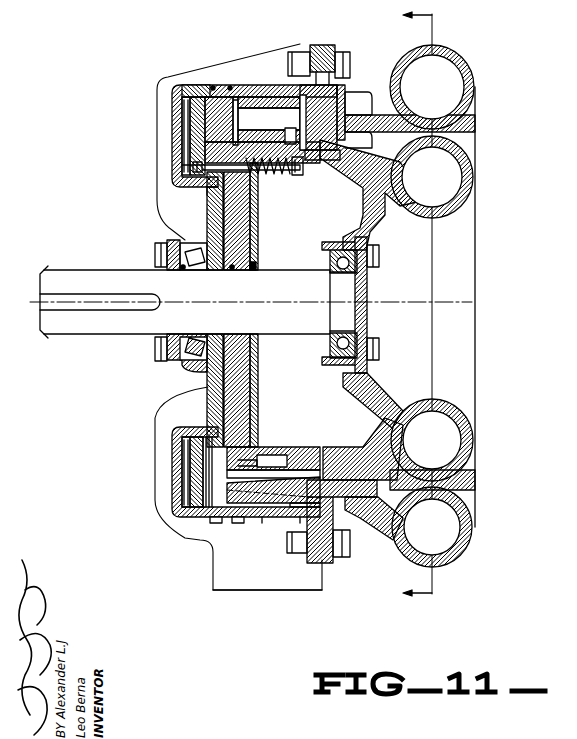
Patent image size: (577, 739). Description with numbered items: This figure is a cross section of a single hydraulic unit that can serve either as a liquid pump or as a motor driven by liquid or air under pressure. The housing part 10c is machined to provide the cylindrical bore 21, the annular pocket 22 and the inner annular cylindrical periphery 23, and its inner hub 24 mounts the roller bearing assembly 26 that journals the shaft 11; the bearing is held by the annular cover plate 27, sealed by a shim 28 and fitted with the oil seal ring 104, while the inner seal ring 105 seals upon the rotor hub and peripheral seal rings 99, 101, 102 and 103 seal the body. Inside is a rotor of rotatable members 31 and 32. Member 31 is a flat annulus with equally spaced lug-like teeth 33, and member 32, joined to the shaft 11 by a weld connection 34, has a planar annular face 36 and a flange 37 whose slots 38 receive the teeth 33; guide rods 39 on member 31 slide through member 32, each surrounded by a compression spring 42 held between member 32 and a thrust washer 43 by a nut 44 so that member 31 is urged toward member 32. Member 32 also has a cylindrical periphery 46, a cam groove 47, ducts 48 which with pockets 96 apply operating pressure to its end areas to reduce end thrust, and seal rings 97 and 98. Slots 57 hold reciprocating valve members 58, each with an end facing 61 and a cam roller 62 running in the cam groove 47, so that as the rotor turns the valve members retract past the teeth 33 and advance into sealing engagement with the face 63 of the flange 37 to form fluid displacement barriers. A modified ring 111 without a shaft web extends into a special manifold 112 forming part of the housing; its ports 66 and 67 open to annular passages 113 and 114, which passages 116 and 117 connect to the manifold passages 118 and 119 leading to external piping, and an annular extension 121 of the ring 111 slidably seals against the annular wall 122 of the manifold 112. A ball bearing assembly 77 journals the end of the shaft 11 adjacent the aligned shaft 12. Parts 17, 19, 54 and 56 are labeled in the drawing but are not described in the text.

The housing part 10c is at (170, 75).
The shaft 11 is at (60, 332).
The shaft 12 is at (427, 305).
The housing wall 17 is at (170, 140).
The base plate 19 is at (233, 590).
The cylindrical bore 21 is at (181, 105).
The annular pocket 22 is at (186, 458).
The inner annular cylindrical periphery 23 is at (171, 440).
The inner hub 24 is at (200, 242).
The roller bearing assembly 26 is at (198, 365).
The annular cover plate 27 is at (165, 240).
The shim 28 is at (176, 240).
The rotatable member 31 is at (195, 122).
The rotatable member 32 is at (254, 222).
The lug-like teeth 33 is at (218, 96).
The weld connection 34 is at (256, 262).
The planar annular face 36 is at (204, 490).
The flange 37 is at (212, 497).
The slots 38 is at (197, 85).
The guide rods 39 is at (188, 166).
The compression spring 42 is at (252, 185).
The thrust washer 43 is at (286, 174).
The nut 44 is at (300, 170).
The cylindrical periphery 46 is at (300, 475).
The cam groove 47 is at (272, 445).
The ducts 48 is at (230, 432).
The cone 54 is at (246, 487).
The cover plate 56 is at (248, 520).
The slots 57 is at (300, 85).
The reciprocating valve member 58 is at (255, 96).
The end facing 61 is at (236, 96).
The cam roller 62 is at (276, 128).
The face 63 is at (205, 540).
The ports 66 is at (288, 466).
The ports 67 is at (272, 523).
The ball bearing assembly 77 is at (368, 262).
The pockets 96 is at (258, 245).
The seal ring 97 is at (248, 458).
The seal ring 98 is at (326, 150).
The peripheral seal ring 99 is at (215, 190).
The peripheral seal ring 101 is at (213, 86).
The peripheral seal ring 102 is at (230, 86).
The peripheral seal ring 103 is at (270, 520).
The oil seal ring 104 is at (183, 269).
The inner seal ring 105 is at (232, 269).
The ring 111 is at (348, 108).
The manifold 112 is at (478, 72).
The annular passage 113 is at (338, 447).
The annular passage 114 is at (352, 510).
The passage 116 is at (396, 400).
The passage 117 is at (400, 545).
The manifold passage 118 is at (455, 444).
The manifold passage 119 is at (450, 525).
The annular extension 121 is at (376, 118).
The annular wall 122 is at (392, 140).